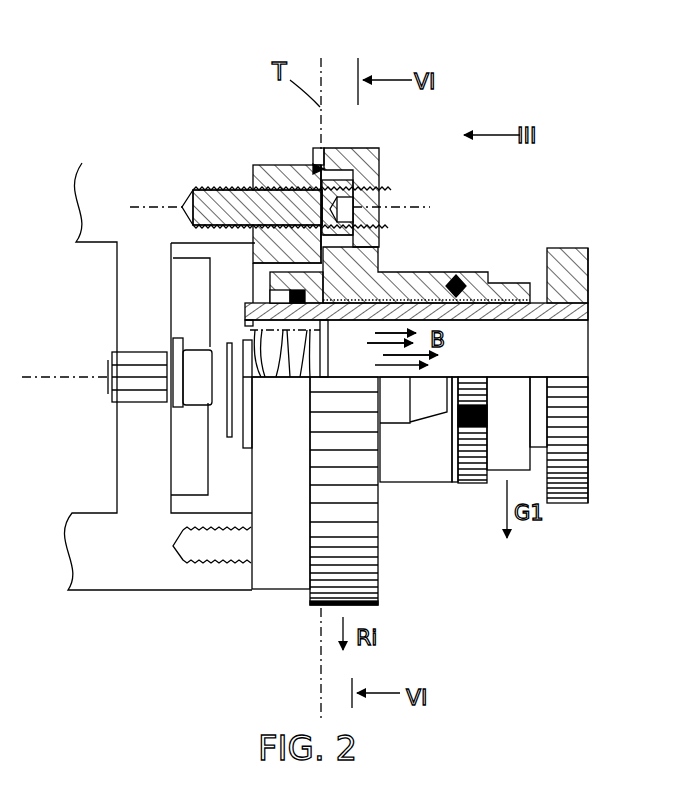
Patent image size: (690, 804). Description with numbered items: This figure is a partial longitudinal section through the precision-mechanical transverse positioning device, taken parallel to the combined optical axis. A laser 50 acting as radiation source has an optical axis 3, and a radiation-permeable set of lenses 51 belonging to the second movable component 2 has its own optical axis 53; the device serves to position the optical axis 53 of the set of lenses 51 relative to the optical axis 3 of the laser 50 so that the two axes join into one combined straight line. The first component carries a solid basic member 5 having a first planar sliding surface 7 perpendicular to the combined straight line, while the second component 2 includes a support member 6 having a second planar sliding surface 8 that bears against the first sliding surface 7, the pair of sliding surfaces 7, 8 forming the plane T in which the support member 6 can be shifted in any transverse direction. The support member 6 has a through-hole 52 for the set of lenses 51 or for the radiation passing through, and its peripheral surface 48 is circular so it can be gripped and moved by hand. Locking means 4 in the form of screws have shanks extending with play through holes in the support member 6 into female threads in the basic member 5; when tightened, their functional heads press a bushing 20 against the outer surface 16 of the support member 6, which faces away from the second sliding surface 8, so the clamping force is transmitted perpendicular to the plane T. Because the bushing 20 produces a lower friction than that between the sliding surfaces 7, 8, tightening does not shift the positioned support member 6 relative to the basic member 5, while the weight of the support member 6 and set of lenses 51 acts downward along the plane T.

The second movable component 2 is at (431, 268).
The optical axis 3 is at (68, 378).
The locking means 4 is at (429, 420).
The basic member 5 is at (315, 167).
The support member 6 is at (352, 160).
The first planar sliding surface 7 is at (317, 171).
The second planar sliding surface 8 is at (328, 264).
The outer surface 16 is at (381, 578).
The bushing 20 is at (399, 414).
The peripheral surface 48 is at (371, 608).
The laser 50 is at (196, 388).
The set of lenses 51 is at (336, 351).
The through-hole 52 is at (250, 355).
The optical axis 53 is at (610, 381).